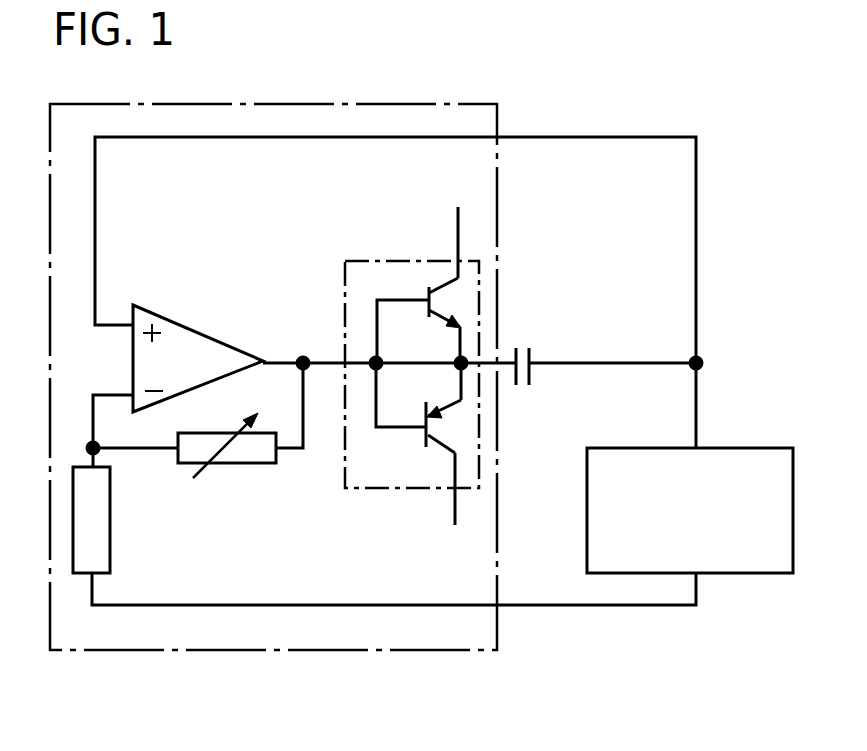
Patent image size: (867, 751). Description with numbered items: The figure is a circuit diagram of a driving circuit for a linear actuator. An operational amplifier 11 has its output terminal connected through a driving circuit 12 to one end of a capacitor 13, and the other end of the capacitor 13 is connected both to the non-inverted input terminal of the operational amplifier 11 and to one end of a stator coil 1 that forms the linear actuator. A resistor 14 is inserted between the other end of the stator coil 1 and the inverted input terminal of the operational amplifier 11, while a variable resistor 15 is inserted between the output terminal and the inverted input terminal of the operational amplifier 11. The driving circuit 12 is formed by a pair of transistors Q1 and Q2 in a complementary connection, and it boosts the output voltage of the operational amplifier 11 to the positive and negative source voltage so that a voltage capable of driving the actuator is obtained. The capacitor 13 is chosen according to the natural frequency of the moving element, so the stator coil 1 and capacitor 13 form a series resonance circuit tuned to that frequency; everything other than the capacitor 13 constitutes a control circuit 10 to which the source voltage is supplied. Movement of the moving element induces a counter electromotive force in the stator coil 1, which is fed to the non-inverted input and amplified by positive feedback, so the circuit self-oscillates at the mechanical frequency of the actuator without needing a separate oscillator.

The stator coil 1 is at (750, 457).
The control circuit 10 is at (148, 650).
The operational amplifier 11 is at (196, 342).
The driving circuit 12 is at (367, 268).
The capacitor 13 is at (527, 362).
The resistor 14 is at (98, 528).
The variable resistor 15 is at (250, 462).
The transistor Q1 is at (453, 307).
The transistor Q2 is at (462, 428).